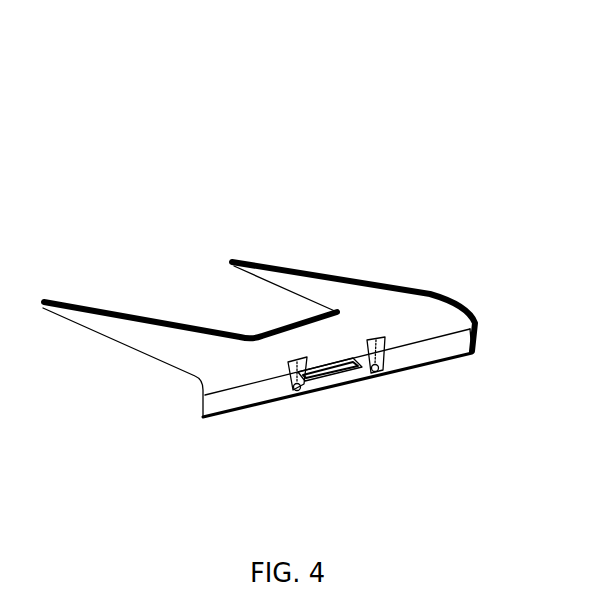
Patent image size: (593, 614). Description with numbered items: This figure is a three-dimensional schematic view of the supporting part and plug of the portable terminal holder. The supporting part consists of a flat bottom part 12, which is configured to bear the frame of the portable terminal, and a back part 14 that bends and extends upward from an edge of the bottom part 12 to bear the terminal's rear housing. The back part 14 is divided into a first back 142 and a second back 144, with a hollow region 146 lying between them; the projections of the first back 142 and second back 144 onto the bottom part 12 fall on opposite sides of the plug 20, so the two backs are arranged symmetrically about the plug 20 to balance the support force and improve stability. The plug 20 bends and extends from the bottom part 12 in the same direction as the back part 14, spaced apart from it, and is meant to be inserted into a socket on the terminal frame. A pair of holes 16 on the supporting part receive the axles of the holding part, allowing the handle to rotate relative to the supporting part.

The bottom part 12 is at (427, 353).
The back part 14 is at (352, 32).
The first back 142 is at (155, 338).
The second back 144 is at (308, 283).
The hollow region 146 is at (242, 313).
The holes 16 is at (300, 392).
The plug 20 is at (337, 388).